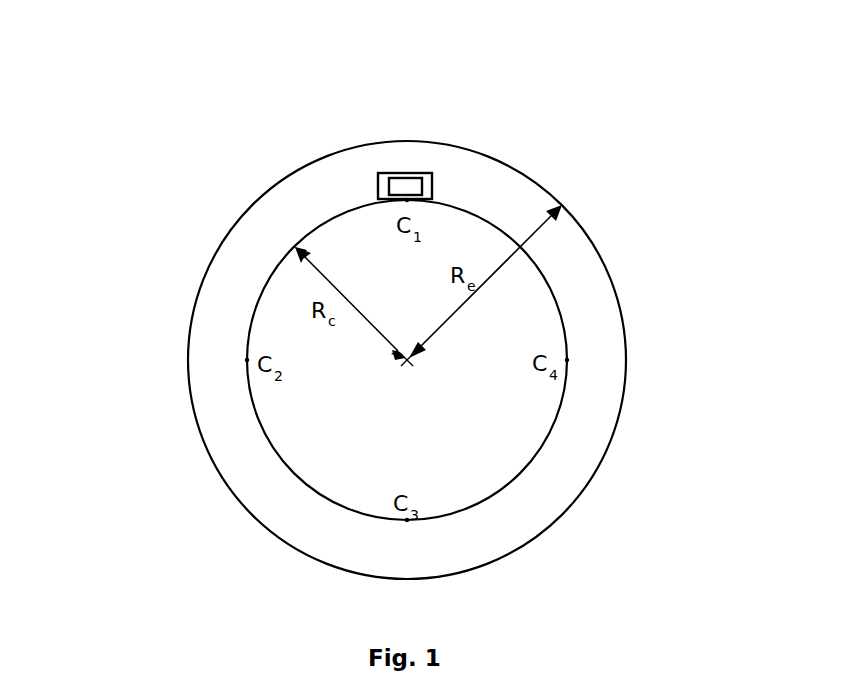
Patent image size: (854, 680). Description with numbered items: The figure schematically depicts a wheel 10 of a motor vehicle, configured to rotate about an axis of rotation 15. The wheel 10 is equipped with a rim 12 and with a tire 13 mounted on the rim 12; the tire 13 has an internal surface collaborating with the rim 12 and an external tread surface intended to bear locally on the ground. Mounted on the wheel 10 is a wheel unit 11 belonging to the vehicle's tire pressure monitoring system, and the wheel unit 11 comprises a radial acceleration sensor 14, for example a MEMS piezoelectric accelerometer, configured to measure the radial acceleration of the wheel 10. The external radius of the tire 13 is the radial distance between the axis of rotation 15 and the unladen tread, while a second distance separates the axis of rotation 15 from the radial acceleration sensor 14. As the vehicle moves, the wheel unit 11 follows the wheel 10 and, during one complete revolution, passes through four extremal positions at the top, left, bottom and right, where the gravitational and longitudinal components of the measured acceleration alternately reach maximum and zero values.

The wheel 10 is at (182, 212).
The wheel unit 11 is at (422, 173).
The rim 12 is at (525, 413).
The tire 13 is at (590, 306).
The radial acceleration sensor 14 is at (395, 183).
The axis of rotation 15 is at (407, 362).